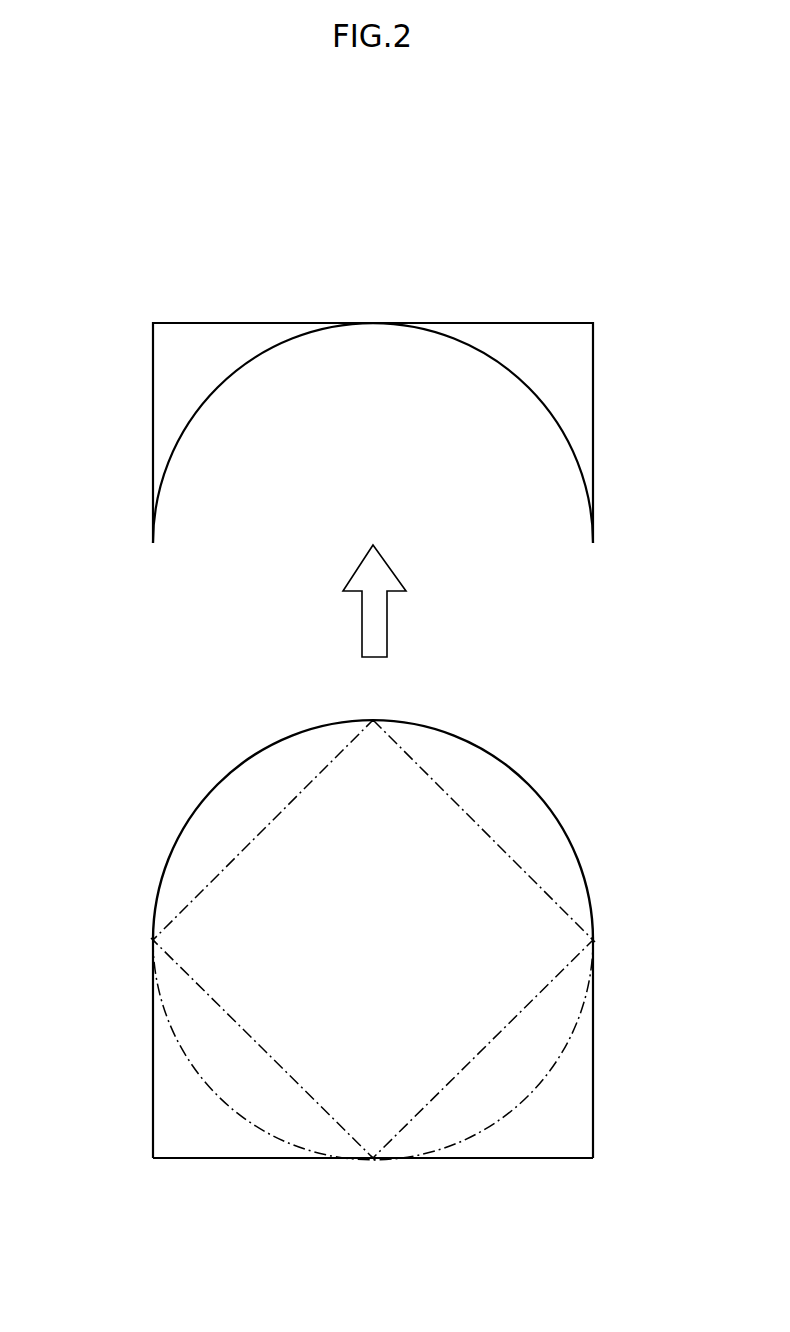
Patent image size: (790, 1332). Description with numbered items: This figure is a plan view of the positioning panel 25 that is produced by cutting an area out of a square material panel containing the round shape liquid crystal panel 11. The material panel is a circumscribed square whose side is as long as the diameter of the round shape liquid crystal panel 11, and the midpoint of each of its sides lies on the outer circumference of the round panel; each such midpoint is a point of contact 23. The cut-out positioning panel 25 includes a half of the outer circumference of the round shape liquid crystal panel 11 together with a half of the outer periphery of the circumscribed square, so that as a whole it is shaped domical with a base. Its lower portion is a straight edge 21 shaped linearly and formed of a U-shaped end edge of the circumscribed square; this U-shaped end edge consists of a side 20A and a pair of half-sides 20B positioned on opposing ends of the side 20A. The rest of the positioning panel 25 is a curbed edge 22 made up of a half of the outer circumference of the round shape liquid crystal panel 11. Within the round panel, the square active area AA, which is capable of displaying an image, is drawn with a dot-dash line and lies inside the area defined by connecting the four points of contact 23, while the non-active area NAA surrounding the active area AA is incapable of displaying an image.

The positioning panel 25 is at (495, 715).
The curbed edge 22 is at (248, 758).
The point of contact 23 is at (153, 940).
The half-side 20B is at (153, 1050).
The side 20A is at (497, 1160).
The straight edge 21 is at (220, 1160).
The round shape liquid crystal panel 11 is at (545, 1082).
The active area AA is at (472, 813).
The non-active area NAA is at (548, 850).